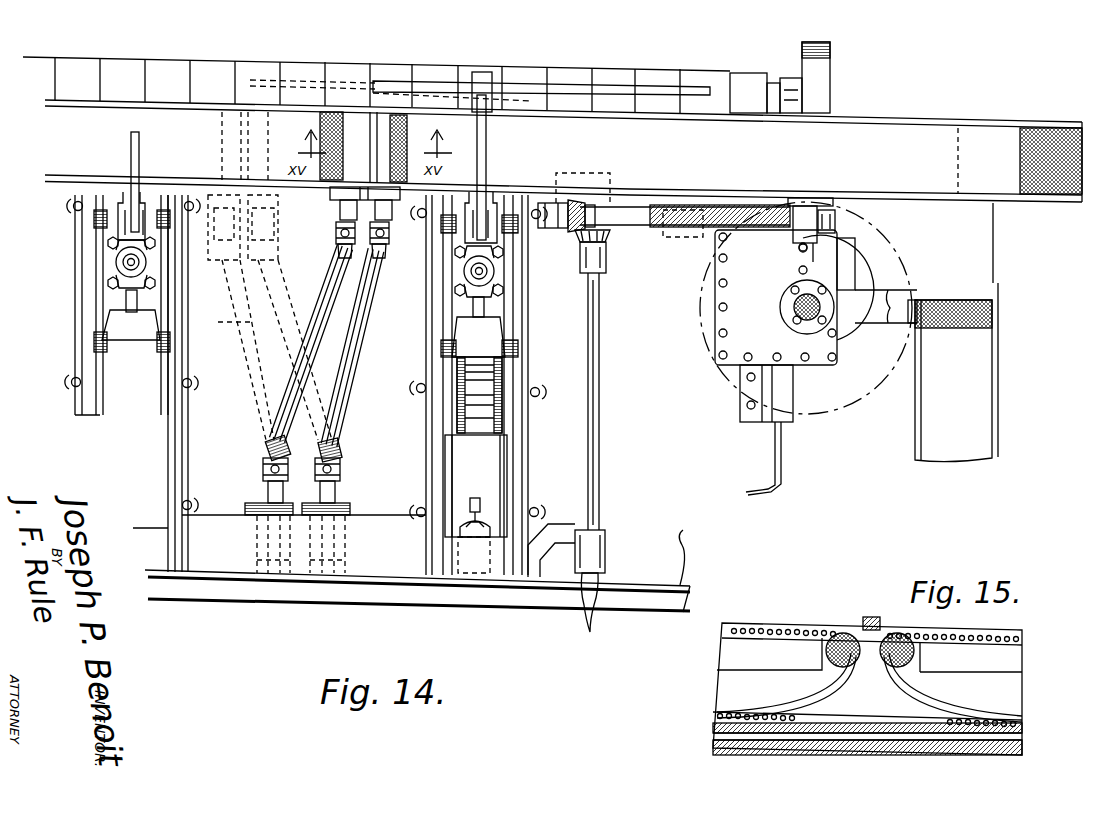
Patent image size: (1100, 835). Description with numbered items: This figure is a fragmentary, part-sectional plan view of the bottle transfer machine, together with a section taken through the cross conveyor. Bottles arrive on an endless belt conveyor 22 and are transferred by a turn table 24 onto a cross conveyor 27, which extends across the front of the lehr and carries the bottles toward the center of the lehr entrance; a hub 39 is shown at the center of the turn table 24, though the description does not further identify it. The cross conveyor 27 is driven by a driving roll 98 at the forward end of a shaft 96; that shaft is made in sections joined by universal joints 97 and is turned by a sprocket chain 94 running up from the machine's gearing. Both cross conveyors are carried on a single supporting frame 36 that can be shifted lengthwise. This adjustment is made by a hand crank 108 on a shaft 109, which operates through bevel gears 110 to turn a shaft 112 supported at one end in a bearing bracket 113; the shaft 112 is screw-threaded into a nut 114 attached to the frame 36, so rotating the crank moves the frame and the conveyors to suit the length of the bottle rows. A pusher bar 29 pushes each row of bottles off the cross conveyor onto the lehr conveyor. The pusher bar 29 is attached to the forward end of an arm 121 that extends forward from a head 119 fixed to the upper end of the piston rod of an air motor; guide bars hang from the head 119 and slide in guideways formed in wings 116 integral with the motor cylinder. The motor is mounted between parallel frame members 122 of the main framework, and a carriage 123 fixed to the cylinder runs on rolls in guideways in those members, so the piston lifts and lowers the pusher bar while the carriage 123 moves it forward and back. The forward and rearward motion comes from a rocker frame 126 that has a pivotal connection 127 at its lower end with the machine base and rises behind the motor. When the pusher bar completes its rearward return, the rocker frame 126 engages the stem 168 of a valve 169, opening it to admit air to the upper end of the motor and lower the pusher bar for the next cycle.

In FIG. 14, the cross conveyor 27 is at (153, 133).
In FIG. 15, the cross conveyor 27 is at (795, 625).
In FIG. 14, the pusher bar 29 is at (606, 90).
In FIG. 14, the arm 121 is at (135, 165).
In FIG. 14, the supporting frame 36 is at (937, 200).
In FIG. 15, the supporting frame 36 is at (725, 693).
In FIG. 14, the shaft 112 is at (622, 207).
In FIG. 14, the nut 114 is at (805, 222).
In FIG. 14, the bevel gears 110 is at (608, 240).
In FIG. 14, the bearing bracket 113 is at (555, 240).
In FIG. 14, the shaft 109 is at (598, 376).
In FIG. 14, the hand crank 108 is at (588, 626).
In FIG. 14, the head 119 is at (117, 265).
In FIG. 14, the carriage 123 is at (110, 305).
In FIG. 14, the wings 116 is at (134, 307).
In FIG. 14, the frame members 122 is at (167, 410).
In FIG. 14, the rocker frame 126 is at (503, 380).
In FIG. 14, the pivotal connection 127 is at (487, 438).
In FIG. 14, the stem 168 is at (488, 486).
In FIG. 14, the valve 169 is at (478, 534).
In FIG. 14, the shaft 96 is at (252, 322).
In FIG. 15, the shaft 96 is at (905, 668).
In FIG. 14, the universal joints 97 is at (336, 231).
In FIG. 14, the sprocket chain 94 is at (340, 512).
In FIG. 14, the turn table 24 is at (827, 412).
In FIG. 14, the gearbox hub 39 is at (803, 318).
In FIG. 14, the endless belt conveyor 22 is at (975, 416).
In FIG. 15, the driving roll 98 is at (840, 662).